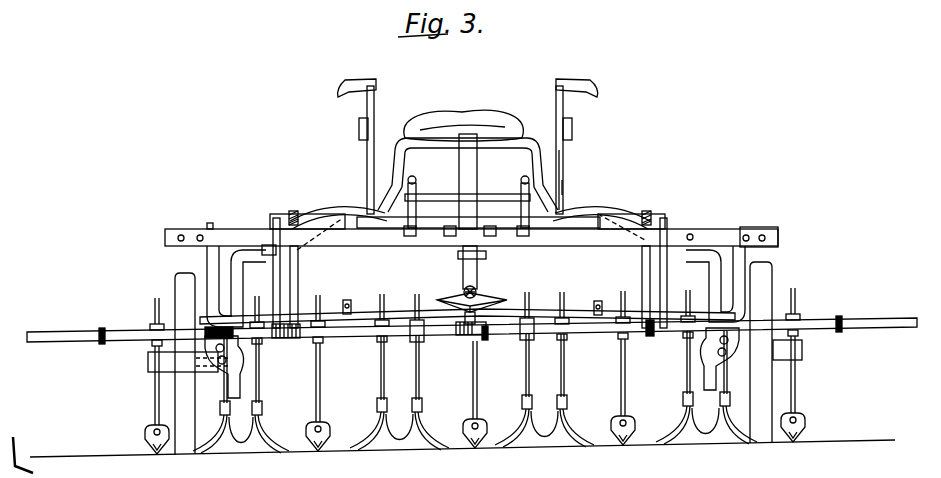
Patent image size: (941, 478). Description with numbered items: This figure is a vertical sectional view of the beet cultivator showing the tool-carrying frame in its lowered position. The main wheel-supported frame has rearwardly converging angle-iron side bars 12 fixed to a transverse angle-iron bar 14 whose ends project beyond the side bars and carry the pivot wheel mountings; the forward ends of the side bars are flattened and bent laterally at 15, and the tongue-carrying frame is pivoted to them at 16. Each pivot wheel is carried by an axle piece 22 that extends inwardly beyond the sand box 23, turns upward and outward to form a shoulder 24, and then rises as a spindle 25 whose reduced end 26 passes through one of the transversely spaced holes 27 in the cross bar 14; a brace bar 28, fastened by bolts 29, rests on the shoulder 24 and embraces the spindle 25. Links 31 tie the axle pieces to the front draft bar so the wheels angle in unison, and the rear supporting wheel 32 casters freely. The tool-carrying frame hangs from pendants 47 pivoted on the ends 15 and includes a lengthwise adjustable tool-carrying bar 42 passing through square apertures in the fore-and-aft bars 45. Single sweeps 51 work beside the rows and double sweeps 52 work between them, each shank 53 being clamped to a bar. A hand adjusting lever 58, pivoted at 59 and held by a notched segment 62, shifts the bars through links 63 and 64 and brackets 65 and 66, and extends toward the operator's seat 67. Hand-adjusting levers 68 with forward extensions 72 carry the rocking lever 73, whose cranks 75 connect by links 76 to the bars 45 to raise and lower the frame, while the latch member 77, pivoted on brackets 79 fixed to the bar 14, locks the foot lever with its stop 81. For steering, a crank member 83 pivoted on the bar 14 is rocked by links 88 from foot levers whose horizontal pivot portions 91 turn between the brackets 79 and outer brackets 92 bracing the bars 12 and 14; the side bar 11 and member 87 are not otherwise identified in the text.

The frame bar 11 is at (189, 229).
The angle-iron side bars 12 is at (318, 214).
The transverse angle-iron bar 14 is at (780, 232).
The flattened laterally bent forward ends 15 is at (271, 220).
The pivot 16 is at (291, 212).
The axle piece 22 is at (150, 360).
The sand box 23 is at (226, 378).
The shoulder 24 is at (205, 330).
The spindle 25 is at (207, 264).
The reduced end 26 is at (210, 223).
The transversely spaced holes 27 is at (283, 288).
The brace bar 28 is at (232, 292).
The bolts 29 is at (262, 254).
The links 31 is at (722, 384).
The rear supporting wheel 32 is at (243, 392).
The tool-carrying bar 42 is at (38, 343).
The fore-and-aft bars 45 is at (102, 344).
The pendants 47 is at (664, 286).
The single sweeps 51 is at (386, 446).
The double sweeps 52 is at (355, 420).
The shank 53 is at (320, 390).
The hand adjusting lever 58 is at (466, 292).
The pivot 59 is at (484, 300).
The notched segment 62 is at (452, 305).
The link 63 is at (385, 306).
The link 64 is at (540, 311).
The bracket 65 is at (341, 300).
The bracket 66 is at (598, 301).
The operator's seat 67 is at (442, 120).
The hand-adjusting levers 68 is at (376, 104).
The forward extension 72 is at (566, 166).
The rocking lever 73 is at (562, 186).
The cranks 75 is at (332, 207).
The links 76 is at (297, 282).
The latch member 77 is at (472, 150).
The brackets 79 is at (532, 138).
The stop 81 is at (459, 256).
The crank member 83 is at (478, 270).
The bar 87 is at (467, 189).
The links 88 is at (410, 175).
The horizontal pivot portion 91 is at (527, 174).
The outer bracket 92 is at (478, 217).